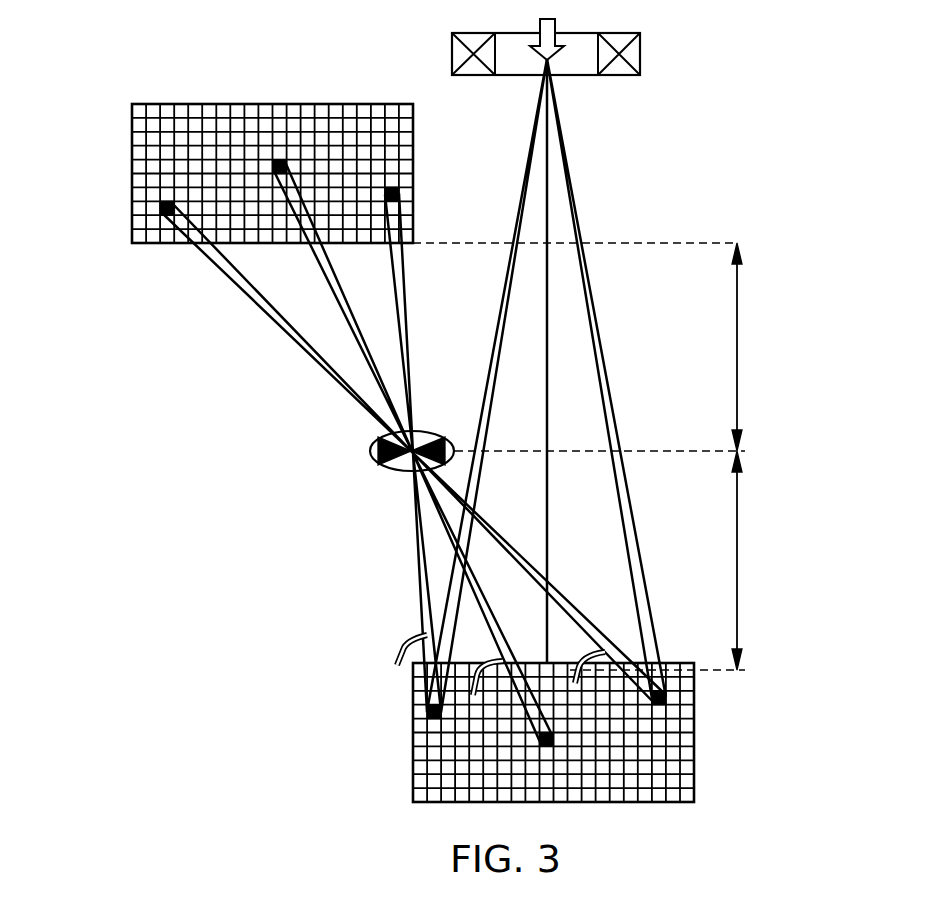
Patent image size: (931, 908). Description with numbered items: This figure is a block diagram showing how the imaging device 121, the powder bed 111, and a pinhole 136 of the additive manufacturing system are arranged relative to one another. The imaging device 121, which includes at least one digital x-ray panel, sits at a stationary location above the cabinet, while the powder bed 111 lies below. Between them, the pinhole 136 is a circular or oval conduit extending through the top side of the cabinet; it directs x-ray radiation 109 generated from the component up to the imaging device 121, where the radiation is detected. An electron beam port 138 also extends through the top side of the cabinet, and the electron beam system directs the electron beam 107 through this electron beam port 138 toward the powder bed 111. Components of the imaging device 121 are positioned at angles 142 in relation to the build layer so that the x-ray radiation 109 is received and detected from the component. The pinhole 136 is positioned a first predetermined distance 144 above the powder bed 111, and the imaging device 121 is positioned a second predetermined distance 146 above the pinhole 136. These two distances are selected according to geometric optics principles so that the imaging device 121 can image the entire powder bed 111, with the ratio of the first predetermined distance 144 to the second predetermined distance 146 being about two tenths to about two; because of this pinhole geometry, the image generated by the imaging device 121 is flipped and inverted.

The imaging device 121 is at (131, 150).
The powder bed 111 is at (672, 727).
The x-ray radiation 109 is at (396, 332).
The electron beam port 138 is at (577, 67).
The electron beam 107 is at (578, 193).
The pinhole 136 is at (430, 432).
The second predetermined distance 146 is at (738, 352).
The first predetermined distance 144 is at (738, 557).
The angles 142 is at (575, 675).